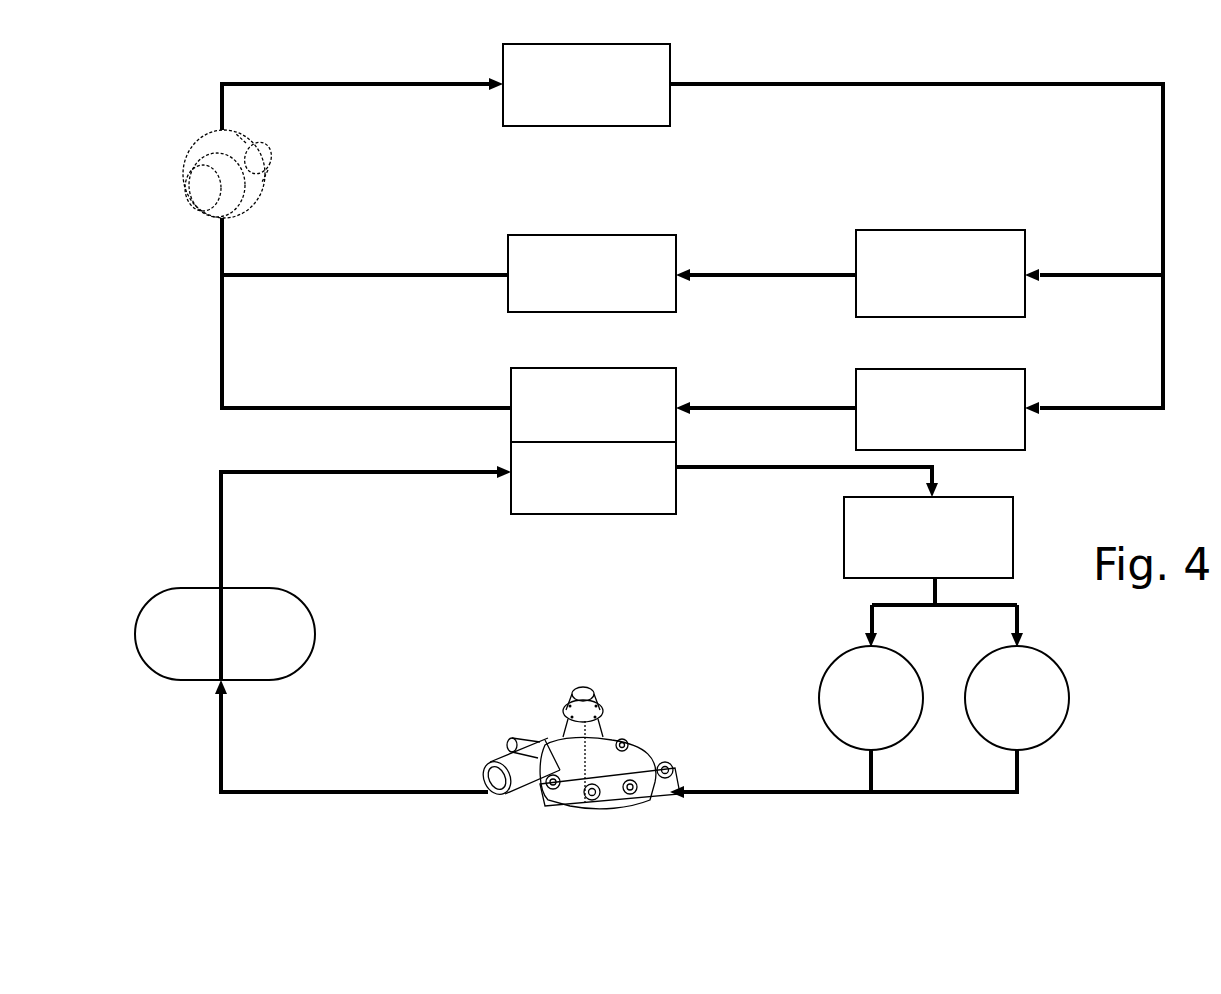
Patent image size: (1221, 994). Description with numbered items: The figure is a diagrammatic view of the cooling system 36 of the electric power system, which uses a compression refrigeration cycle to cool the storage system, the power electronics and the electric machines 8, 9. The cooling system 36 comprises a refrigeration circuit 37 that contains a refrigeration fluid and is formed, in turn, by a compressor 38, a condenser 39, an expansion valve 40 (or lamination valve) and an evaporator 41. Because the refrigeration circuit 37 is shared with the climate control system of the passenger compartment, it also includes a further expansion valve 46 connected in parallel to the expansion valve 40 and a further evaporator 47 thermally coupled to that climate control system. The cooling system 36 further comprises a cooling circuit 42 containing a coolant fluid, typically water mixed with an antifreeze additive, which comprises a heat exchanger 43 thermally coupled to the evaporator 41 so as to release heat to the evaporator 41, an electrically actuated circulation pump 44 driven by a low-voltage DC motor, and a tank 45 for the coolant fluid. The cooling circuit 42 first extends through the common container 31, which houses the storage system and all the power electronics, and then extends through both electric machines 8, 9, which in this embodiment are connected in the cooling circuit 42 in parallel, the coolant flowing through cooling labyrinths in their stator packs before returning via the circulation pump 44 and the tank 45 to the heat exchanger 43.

The electric machine 8 is at (1017, 698).
The electric machine 9 is at (871, 698).
The common container 31 is at (928, 537).
The cooling system 36 is at (1103, 746).
The refrigeration circuit 37 is at (1124, 464).
The compressor 38 is at (258, 197).
The condenser 39 is at (586, 85).
The expansion valve 40 is at (940, 409).
The evaporator 41 is at (593, 405).
The cooling circuit 42 is at (1114, 653).
The heat exchanger 43 is at (593, 478).
The circulation pump 44 is at (580, 712).
The tank 45 is at (225, 634).
The further expansion valve 46 is at (940, 273).
The further evaporator 47 is at (592, 273).